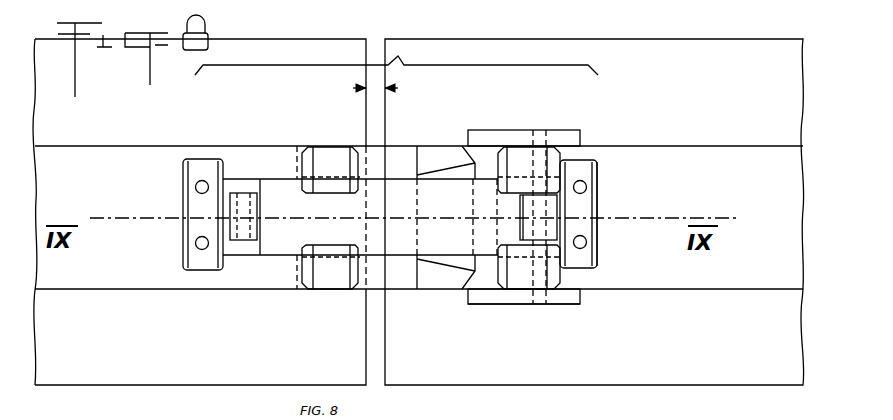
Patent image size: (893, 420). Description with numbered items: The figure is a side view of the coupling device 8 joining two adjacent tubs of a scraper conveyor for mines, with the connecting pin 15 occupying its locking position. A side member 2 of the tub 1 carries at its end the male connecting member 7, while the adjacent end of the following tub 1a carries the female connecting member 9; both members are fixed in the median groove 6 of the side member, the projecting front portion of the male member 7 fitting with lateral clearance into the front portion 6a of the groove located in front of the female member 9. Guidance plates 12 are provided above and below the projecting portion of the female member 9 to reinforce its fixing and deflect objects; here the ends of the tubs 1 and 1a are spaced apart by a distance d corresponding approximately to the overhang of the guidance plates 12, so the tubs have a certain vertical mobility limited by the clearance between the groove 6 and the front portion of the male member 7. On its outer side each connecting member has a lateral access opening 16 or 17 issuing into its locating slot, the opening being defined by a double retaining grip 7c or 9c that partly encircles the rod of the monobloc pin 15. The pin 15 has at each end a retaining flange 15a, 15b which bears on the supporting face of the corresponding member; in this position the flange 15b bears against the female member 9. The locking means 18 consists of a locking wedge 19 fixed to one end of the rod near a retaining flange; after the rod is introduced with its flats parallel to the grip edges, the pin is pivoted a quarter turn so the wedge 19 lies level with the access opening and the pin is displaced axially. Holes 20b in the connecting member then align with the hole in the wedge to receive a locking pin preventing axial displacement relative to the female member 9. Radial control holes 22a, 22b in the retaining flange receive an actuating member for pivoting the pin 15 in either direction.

The tub 1 is at (316, 36).
The following tub 1a is at (686, 387).
The side member 2 is at (74, 128).
The median groove 6 is at (70, 172).
The front portion of the median groove 6a is at (483, 275).
The male connecting member 7 is at (333, 294).
The retaining grip 7c is at (319, 148).
The coupling device 8 is at (396, 54).
The female connecting member 9 is at (542, 127).
The retaining grip 9c is at (513, 162).
The guidance plates 12 is at (580, 136).
The connecting pin 15 is at (393, 203).
The retaining flange 15a is at (185, 232).
The retaining flange 15b is at (598, 166).
The lateral access opening 16 is at (347, 220).
The lateral access opening 17 is at (513, 220).
The locking means 18 is at (550, 309).
The locking wedge 19 is at (598, 233).
The holes 20b is at (557, 133).
The radial control hole 22a is at (202, 180).
The radial control hole 22b is at (202, 250).
The distance d is at (372, 91).